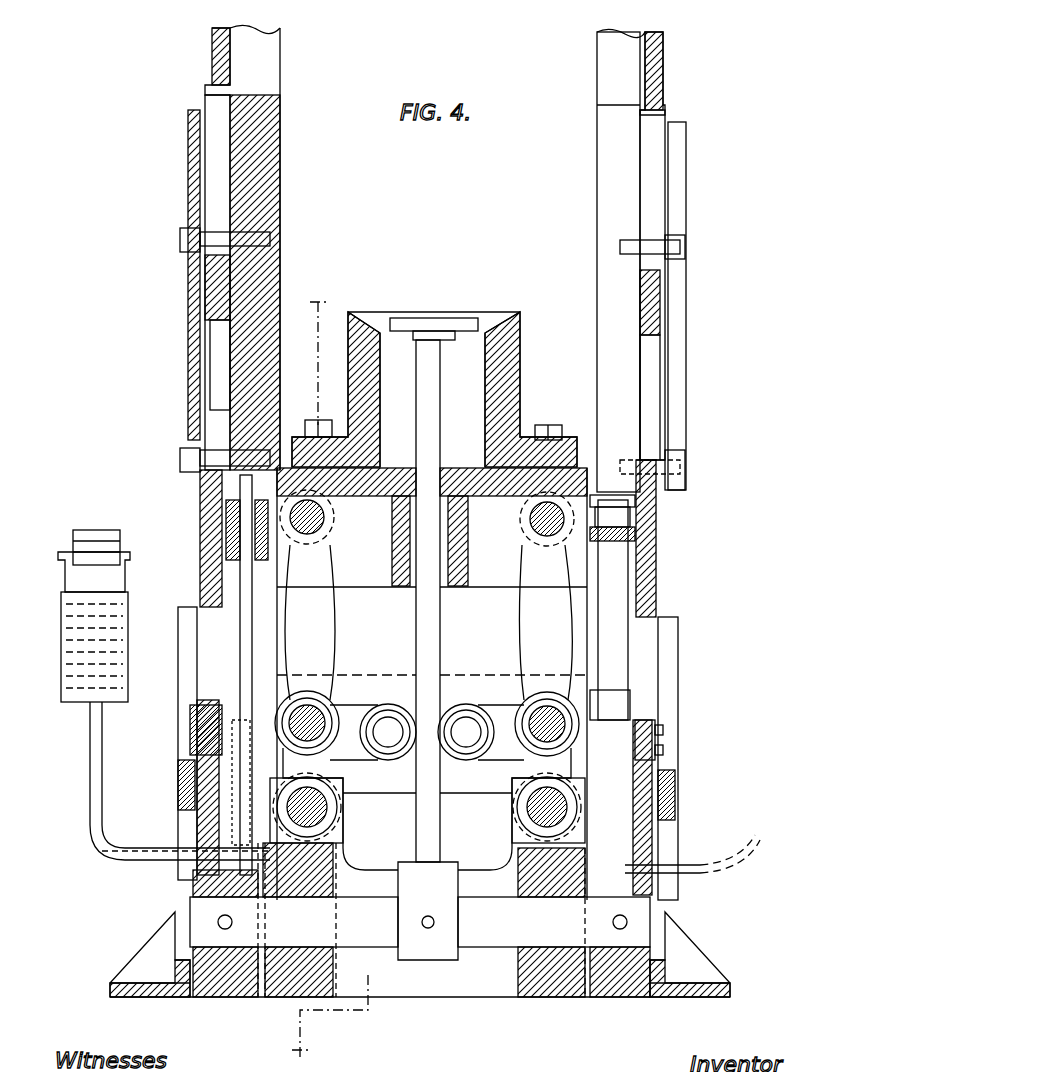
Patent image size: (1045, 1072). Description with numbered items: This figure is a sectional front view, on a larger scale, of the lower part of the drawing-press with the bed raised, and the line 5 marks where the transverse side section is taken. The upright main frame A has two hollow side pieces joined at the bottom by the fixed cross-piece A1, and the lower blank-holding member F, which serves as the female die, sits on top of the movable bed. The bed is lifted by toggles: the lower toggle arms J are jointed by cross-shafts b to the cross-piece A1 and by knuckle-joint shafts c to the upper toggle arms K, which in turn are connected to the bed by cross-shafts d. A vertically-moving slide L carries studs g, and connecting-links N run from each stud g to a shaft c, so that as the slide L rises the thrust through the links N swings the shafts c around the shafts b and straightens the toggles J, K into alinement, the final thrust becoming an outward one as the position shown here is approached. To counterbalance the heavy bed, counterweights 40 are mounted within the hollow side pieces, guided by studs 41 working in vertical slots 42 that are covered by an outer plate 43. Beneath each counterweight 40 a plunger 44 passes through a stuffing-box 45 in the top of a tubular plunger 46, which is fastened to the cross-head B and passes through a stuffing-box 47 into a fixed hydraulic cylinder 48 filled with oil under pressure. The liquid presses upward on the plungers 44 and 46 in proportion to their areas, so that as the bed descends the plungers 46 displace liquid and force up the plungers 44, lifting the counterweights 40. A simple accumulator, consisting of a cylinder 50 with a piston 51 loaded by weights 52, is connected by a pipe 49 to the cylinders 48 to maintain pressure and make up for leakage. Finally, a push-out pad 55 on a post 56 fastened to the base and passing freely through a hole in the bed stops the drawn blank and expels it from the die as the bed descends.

The main frame A is at (200, 66).
The cross-piece at the base A1 is at (310, 945).
The cross-head B is at (432, 684).
The lower blank-holding member F is at (348, 380).
The toggle arms K is at (428, 622).
The slide L is at (474, 672).
The connecting-links N is at (427, 732).
The toggle arms J is at (427, 809).
The cross-shafts b is at (330, 814).
The knuckle-joint shafts c is at (322, 714).
The cross-shafts d is at (322, 530).
The stud g is at (427, 732).
The section line 5 is at (330, 675).
The counterweights 40 is at (280, 340).
The studs 41 is at (643, 466).
The vertical slots 42 is at (690, 397).
The outer plate 43 is at (188, 180).
The plunger 44 is at (240, 630).
The stuffing-box 45 is at (226, 530).
The tubular plunger 46 is at (200, 596).
The stuffing-box 47 is at (205, 702).
The hydraulic cylinder 48 is at (195, 775).
The pipe 49 is at (90, 760).
The accumulator cylinder 50 is at (82, 647).
The piston 51 is at (70, 578).
The weights 52 is at (96, 534).
The push-out pad 55 is at (440, 325).
The post 56 is at (440, 415).